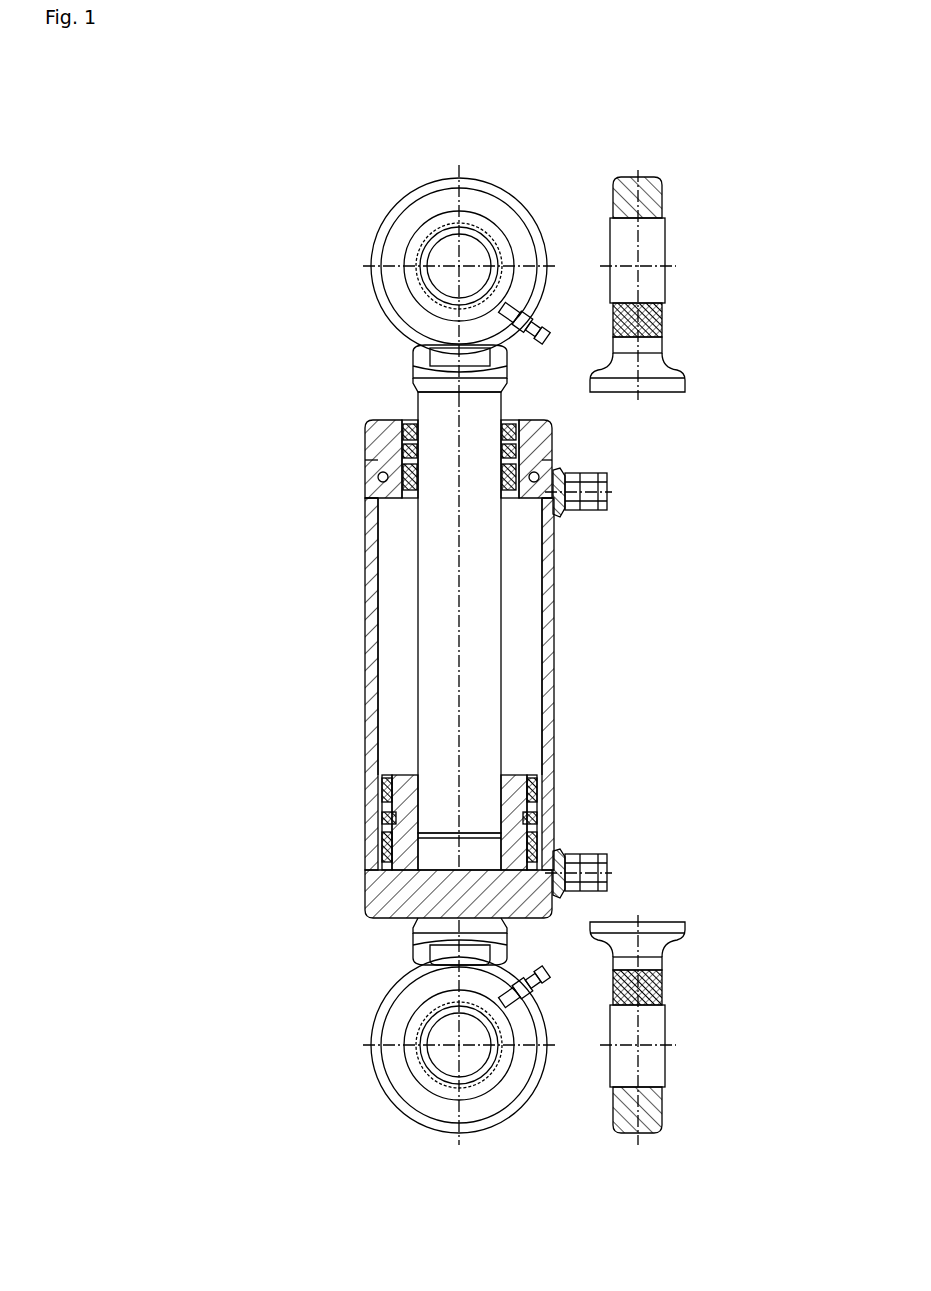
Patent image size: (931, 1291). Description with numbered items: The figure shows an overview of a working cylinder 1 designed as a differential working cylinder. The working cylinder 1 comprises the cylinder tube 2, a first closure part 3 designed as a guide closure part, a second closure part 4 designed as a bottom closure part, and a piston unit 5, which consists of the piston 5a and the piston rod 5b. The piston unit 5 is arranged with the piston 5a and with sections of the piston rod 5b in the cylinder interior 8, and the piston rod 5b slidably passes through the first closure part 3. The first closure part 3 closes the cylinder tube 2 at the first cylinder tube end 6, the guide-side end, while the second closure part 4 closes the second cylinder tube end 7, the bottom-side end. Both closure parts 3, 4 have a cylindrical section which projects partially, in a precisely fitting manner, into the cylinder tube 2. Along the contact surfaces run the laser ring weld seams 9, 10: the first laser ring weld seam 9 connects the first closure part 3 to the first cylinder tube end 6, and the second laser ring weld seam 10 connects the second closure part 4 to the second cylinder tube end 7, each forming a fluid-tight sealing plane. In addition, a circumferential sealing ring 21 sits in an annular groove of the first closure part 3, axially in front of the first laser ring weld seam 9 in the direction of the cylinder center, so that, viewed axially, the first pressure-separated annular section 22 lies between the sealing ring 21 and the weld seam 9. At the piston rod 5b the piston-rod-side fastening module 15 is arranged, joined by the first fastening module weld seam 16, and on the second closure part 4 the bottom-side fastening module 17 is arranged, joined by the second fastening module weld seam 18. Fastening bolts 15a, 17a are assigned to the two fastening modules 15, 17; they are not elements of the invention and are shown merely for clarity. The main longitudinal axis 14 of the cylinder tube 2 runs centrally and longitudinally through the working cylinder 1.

The working cylinder 1 is at (320, 597).
The cylinder tube 2 is at (553, 612).
The first closure part 3 is at (380, 423).
The second closure part 4 is at (420, 925).
The piston unit 5 is at (388, 742).
The piston 5a is at (517, 805).
The piston rod 5b is at (477, 767).
The first cylinder tube end 6 is at (553, 460).
The second cylinder tube end 7 is at (375, 845).
The cylinder interior 8 is at (520, 678).
The first laser ring weld seam 9 is at (367, 425).
The second laser ring weld seam 10 is at (372, 897).
The main longitudinal axis 14 is at (460, 563).
The piston-rod-side fastening module 15 is at (494, 195).
The fastening bolt of the piston-rod-side fastening module 15a is at (642, 272).
The first fastening module weld seam 16 is at (402, 385).
The bottom-side fastening module 17 is at (398, 1012).
The fastening bolt of the bottom-side fastening module 17a is at (655, 1025).
The second fastening module weld seam 18 is at (410, 945).
The first circumferential sealing ring 21 is at (368, 510).
The first pressure-separated annular section 22 is at (365, 462).